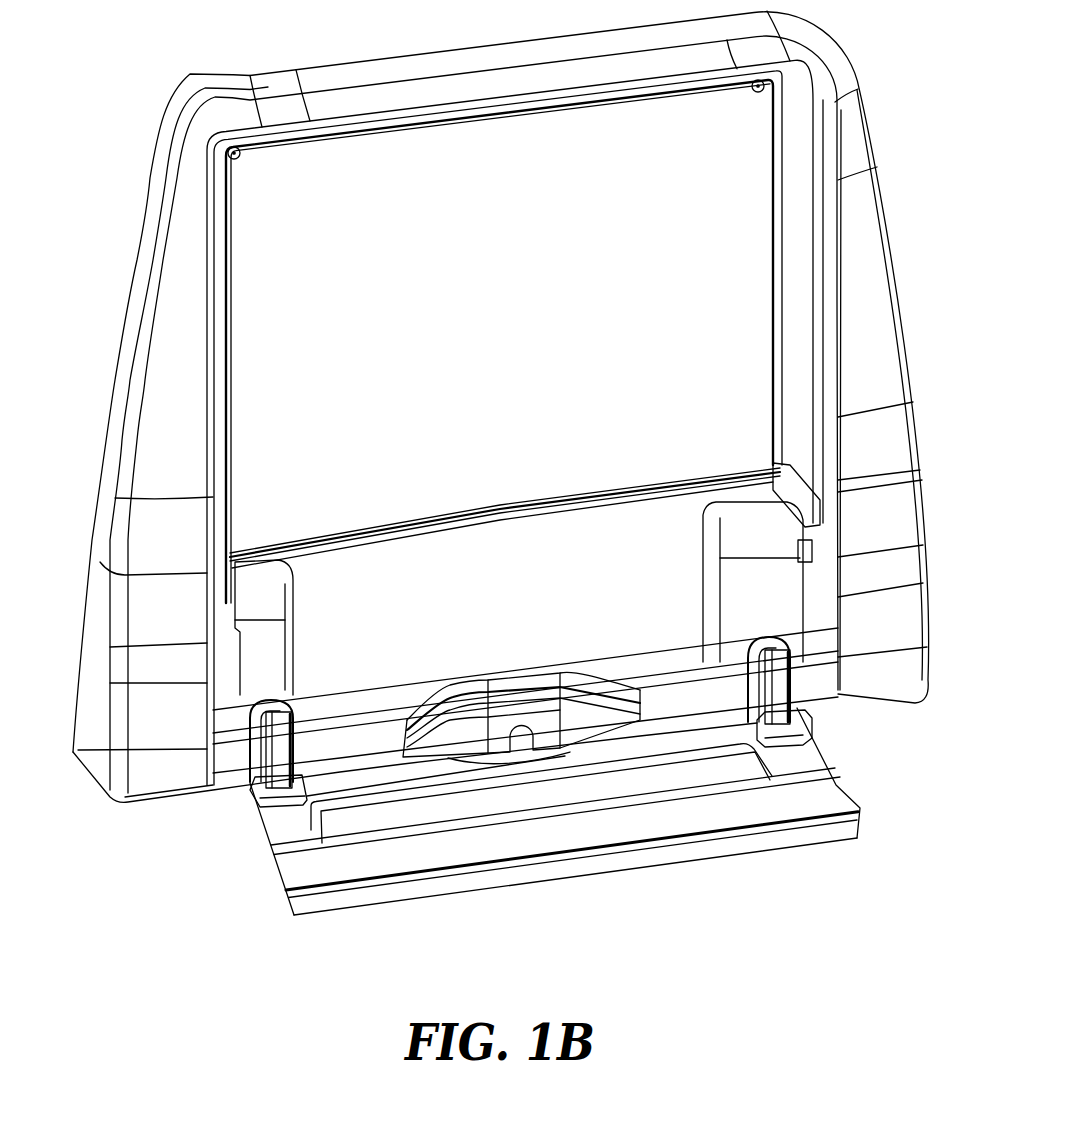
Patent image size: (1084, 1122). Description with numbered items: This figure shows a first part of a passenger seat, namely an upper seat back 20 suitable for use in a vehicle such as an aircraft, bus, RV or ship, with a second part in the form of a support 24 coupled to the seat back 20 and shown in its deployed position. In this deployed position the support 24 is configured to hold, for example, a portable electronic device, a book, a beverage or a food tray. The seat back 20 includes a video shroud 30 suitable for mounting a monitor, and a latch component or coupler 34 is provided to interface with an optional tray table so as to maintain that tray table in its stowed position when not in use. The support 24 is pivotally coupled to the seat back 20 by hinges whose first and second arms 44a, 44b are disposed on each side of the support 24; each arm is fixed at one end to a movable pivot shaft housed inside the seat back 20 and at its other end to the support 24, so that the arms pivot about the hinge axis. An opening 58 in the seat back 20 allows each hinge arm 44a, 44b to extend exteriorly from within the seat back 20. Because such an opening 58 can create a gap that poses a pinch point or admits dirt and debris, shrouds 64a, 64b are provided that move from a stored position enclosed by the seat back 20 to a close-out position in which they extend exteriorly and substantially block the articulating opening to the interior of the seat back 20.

The upper seat back 20 is at (134, 290).
The video shroud 30 is at (817, 192).
The support 24 is at (812, 767).
The latch component or coupler 34 is at (547, 737).
The first hinge arm 44a is at (280, 746).
The second hinge arm 44b is at (783, 680).
The first shroud 64a is at (257, 722).
The second shroud 64b is at (780, 650).
The opening 58 is at (262, 706).